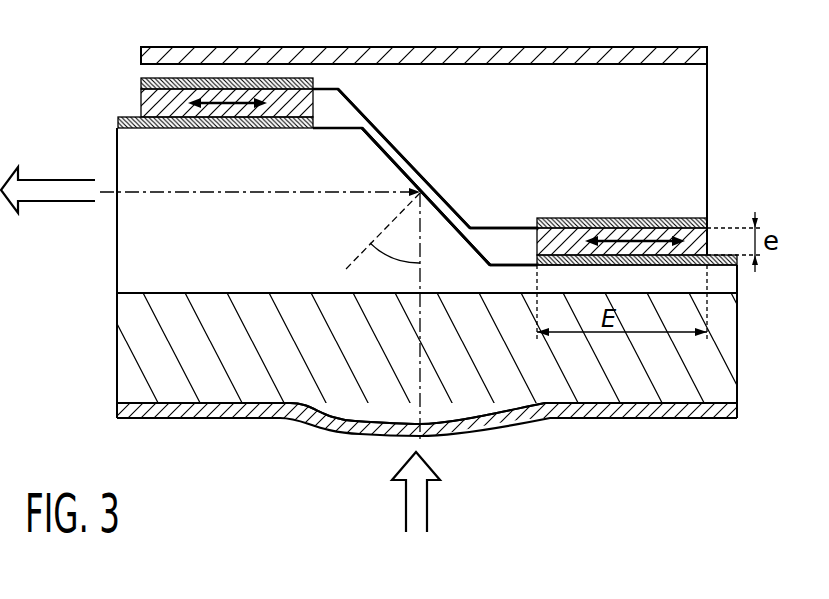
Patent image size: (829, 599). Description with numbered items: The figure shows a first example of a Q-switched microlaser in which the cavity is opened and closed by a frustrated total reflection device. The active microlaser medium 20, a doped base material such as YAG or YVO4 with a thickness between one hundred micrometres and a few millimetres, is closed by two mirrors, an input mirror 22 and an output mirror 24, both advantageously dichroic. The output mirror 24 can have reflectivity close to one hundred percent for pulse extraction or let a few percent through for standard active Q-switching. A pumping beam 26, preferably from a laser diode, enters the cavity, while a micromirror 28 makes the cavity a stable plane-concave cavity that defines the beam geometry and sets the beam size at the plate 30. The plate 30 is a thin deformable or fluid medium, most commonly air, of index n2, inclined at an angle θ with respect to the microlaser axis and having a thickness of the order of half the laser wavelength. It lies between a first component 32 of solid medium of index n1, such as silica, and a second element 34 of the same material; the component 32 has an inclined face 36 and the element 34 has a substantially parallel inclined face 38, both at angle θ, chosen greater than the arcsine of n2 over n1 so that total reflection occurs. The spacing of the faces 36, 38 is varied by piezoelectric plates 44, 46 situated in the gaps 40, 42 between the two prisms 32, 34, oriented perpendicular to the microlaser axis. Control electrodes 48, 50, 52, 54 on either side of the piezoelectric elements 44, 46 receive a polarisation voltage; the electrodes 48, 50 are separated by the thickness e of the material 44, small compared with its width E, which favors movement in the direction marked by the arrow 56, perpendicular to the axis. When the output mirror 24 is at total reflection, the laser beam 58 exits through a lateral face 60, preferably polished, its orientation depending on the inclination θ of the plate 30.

The active microlaser medium 20 is at (688, 358).
The input mirror 22 is at (705, 412).
The output mirror 24 is at (707, 53).
The pumping beam 26 is at (406, 502).
The micromirror 28 is at (497, 427).
The plate 30 is at (427, 148).
The component 32 is at (133, 272).
The second element 34 is at (686, 107).
The inclined face 36 is at (438, 217).
The inclined face 38 is at (423, 176).
The gap 40 is at (513, 245).
The gap 42 is at (332, 113).
The piezoelectric plate 44 is at (707, 252).
The piezoelectric plate 46 is at (141, 100).
The control electrode 48 is at (683, 232).
The control electrode 50 is at (537, 265).
The control electrode 52 is at (141, 82).
The control electrode 54 is at (247, 128).
The arrow 56 is at (622, 226).
The laser beam 58 is at (84, 195).
The lateral face 60 is at (117, 237).